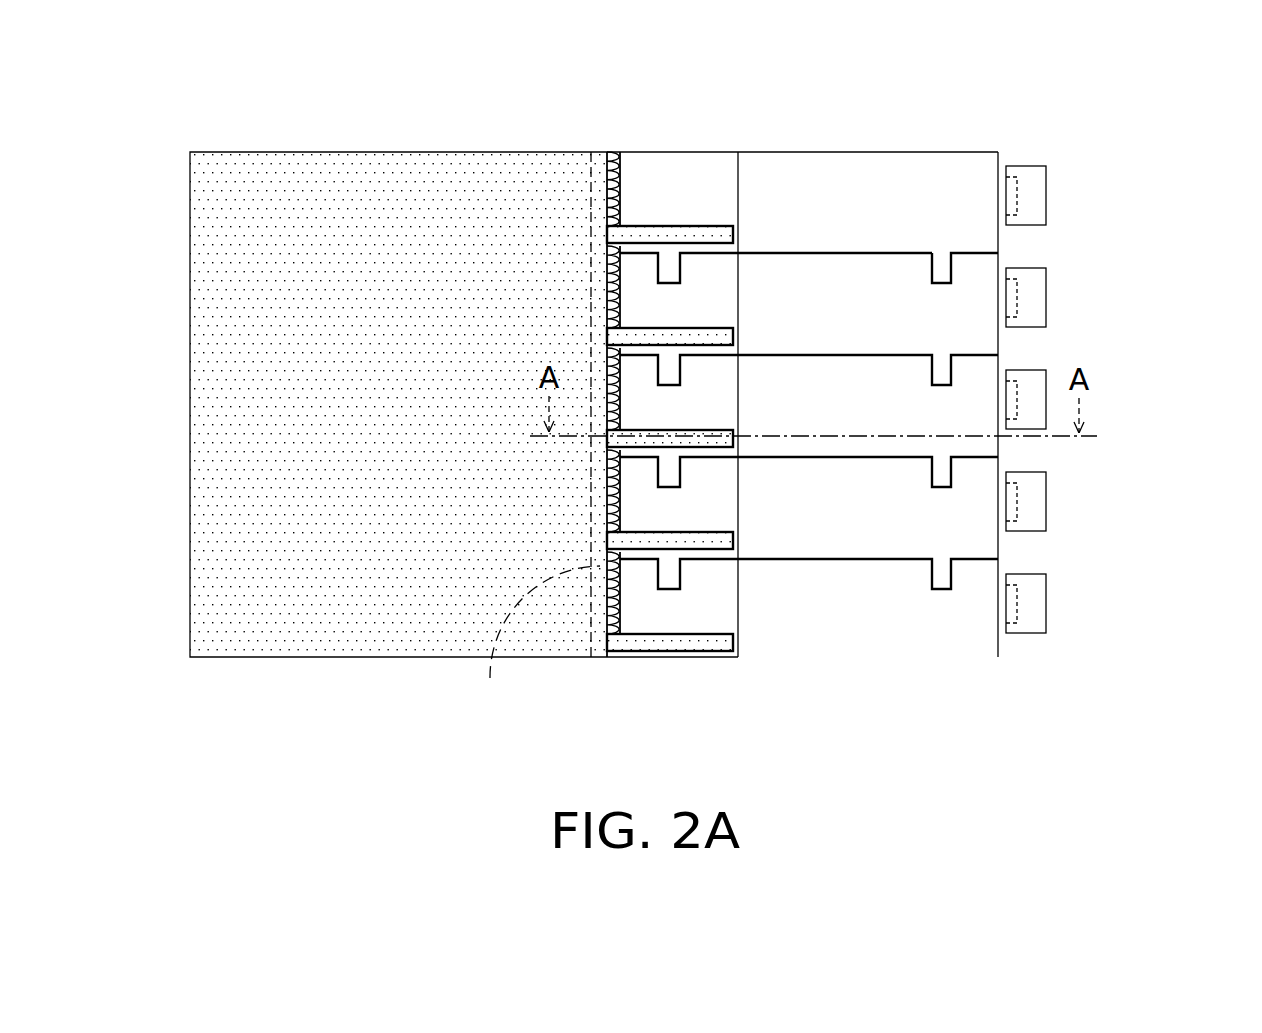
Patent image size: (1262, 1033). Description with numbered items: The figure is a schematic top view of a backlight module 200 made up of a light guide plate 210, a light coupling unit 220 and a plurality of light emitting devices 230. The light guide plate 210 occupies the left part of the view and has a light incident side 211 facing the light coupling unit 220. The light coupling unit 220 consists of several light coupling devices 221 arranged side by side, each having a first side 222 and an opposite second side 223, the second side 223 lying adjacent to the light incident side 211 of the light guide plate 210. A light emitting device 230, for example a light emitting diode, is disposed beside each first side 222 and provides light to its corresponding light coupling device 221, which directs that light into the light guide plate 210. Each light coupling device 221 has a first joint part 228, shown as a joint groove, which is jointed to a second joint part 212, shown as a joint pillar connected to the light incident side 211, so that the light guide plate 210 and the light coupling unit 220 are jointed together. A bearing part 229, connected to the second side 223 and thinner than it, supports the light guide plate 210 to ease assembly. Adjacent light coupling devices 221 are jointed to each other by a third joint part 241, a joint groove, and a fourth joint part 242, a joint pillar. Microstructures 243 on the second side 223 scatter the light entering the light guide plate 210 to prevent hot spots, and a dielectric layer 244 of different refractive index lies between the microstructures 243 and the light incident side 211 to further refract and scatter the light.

The backlight module 200 is at (1236, 684).
The light guide plate 210 is at (357, 165).
The light incident side 211 is at (603, 622).
The second joint part 212 is at (690, 643).
The light coupling unit 220 is at (747, 116).
The light coupling device 221 is at (790, 168).
The first side 222 is at (996, 166).
The second side 223 is at (625, 167).
The first joint part 228 is at (724, 654).
The bearing part 229 is at (530, 644).
The light emitting device 230 is at (1037, 603).
The third joint part 241 is at (955, 272).
The fourth joint part 242 is at (941, 258).
The microstructure 243 is at (618, 152).
The dielectric layer 244 is at (603, 192).